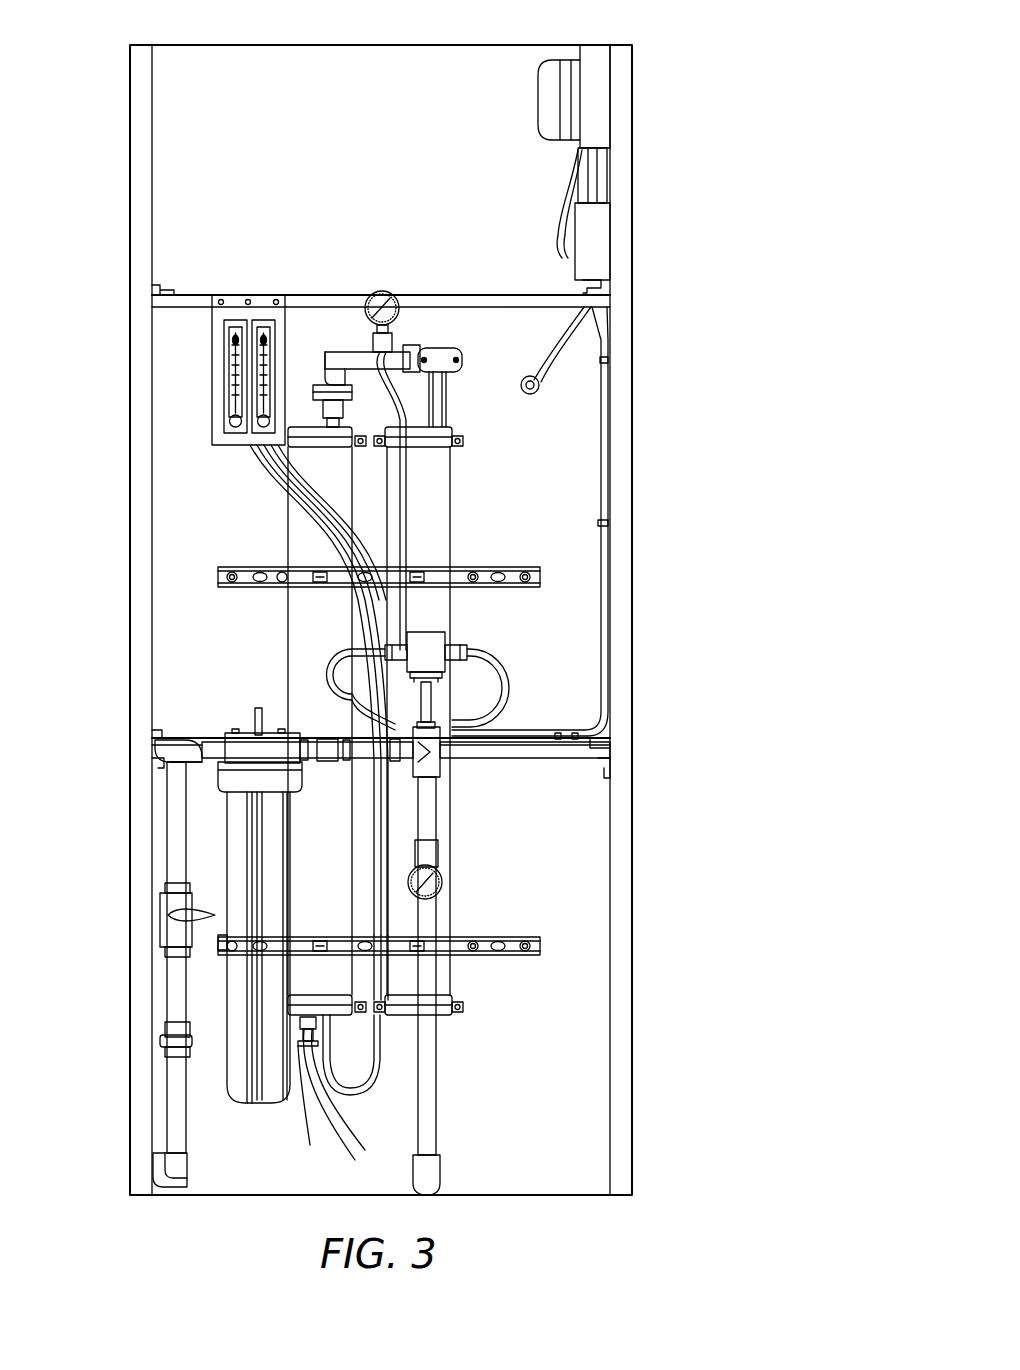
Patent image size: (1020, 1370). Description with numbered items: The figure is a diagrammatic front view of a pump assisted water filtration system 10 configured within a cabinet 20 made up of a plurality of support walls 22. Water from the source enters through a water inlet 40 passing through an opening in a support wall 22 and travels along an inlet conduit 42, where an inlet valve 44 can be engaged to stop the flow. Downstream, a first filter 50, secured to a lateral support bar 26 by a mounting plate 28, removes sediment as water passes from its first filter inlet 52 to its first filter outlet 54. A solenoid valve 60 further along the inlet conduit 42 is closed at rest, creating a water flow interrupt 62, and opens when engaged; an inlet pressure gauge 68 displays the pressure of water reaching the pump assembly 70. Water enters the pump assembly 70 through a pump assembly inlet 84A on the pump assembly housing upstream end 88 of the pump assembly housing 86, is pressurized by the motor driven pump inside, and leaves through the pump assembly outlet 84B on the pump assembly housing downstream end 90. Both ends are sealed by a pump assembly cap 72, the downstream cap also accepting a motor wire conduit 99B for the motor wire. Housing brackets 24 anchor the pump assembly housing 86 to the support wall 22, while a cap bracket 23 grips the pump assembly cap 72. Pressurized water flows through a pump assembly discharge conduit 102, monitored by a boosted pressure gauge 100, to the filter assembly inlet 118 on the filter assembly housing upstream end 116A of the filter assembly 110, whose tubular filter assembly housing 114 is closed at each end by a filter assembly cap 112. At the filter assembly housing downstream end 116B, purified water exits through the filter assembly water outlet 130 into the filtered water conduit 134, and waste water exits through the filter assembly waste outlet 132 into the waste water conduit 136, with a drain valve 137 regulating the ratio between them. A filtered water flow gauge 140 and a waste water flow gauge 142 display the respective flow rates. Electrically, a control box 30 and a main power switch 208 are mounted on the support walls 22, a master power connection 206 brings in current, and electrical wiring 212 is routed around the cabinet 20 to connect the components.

The pump assisted water filtration system 10 is at (694, 1066).
The cabinet 20 is at (150, 375).
The support walls 22 is at (180, 200).
The cap bracket 23 is at (463, 442).
The housing brackets 24 is at (505, 567).
The lateral support bar 26 is at (612, 748).
The mounting plate 28 is at (245, 733).
The control box 30 is at (598, 95).
The water inlet 40 is at (155, 1195).
The inlet conduit 42 is at (437, 1140).
The inlet valve 44 is at (168, 935).
The first filter 50 is at (278, 1103).
The first filter inlet 52 is at (218, 740).
The first filter outlet 54 is at (285, 733).
The solenoid valve 60 is at (438, 640).
The water flow interrupt 62 is at (440, 770).
The inlet pressure gauge 68 is at (440, 875).
The pump assembly 70 is at (451, 507).
The pump assembly cap 72 is at (452, 428).
The pump assembly inlet 84A is at (400, 1040).
The pump assembly outlet 84B is at (430, 415).
The pump assembly housing 86 is at (440, 548).
The pump assembly housing upstream end 88 is at (458, 1008).
The pump assembly housing downstream end 90 is at (455, 448).
The motor wire conduit 99B is at (440, 395).
The boosted pressure gauge 100 is at (387, 292).
The pump assembly discharge conduit 102 is at (343, 352).
The filter assembly 110 is at (290, 540).
The filter assembly cap 112 is at (305, 420).
The filter assembly housing 114 is at (300, 565).
The filter assembly housing upstream end 116A is at (330, 450).
The filter assembly housing downstream end 116B is at (330, 1000).
The filter assembly inlet 118 is at (296, 420).
The filter assembly water outlet 130 is at (348, 1107).
The filter assembly waste outlet 132 is at (357, 1096).
The filtered water conduit 134 is at (300, 452).
The waste water conduit 136 is at (262, 447).
The drain valve 137 is at (318, 1093).
The filtered water flow gauge 140 is at (260, 320).
The waste water flow gauge 142 is at (224, 326).
The master power connection 206 is at (535, 392).
The main power switch 208 is at (605, 237).
The electrical wiring 212 is at (608, 465).